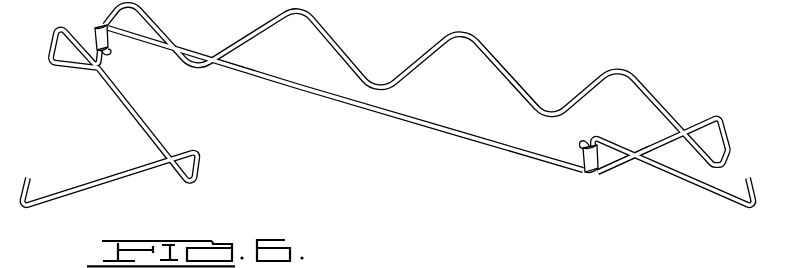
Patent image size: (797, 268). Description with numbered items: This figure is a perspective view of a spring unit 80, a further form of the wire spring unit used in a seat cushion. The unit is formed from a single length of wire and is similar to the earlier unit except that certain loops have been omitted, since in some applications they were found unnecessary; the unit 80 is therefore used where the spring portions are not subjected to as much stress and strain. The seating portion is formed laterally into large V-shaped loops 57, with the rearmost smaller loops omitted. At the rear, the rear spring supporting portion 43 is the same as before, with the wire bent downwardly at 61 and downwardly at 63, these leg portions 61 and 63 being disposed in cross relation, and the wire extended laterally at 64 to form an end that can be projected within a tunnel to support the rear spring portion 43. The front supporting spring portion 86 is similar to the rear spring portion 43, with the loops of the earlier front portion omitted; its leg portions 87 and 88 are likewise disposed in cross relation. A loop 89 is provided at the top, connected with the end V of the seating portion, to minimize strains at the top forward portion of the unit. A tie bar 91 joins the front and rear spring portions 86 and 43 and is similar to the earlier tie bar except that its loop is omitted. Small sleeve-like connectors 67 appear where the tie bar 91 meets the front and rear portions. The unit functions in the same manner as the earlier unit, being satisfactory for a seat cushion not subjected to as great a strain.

The rear spring supporting portion 43 is at (623, 171).
The large V-shaped loops 57 is at (503, 61).
The downwardly bent portion 61 is at (670, 138).
The downward leg portion 63 is at (703, 190).
The laterally extended end 64 is at (768, 171).
The sleeve connector 67 is at (97, 28).
The spring unit 80 is at (340, 41).
The front supporting spring portion 86 is at (160, 134).
The leg portion 87 is at (83, 190).
The leg portion 88 is at (125, 101).
The loop 89 is at (74, 67).
The tie bar 91 is at (384, 117).